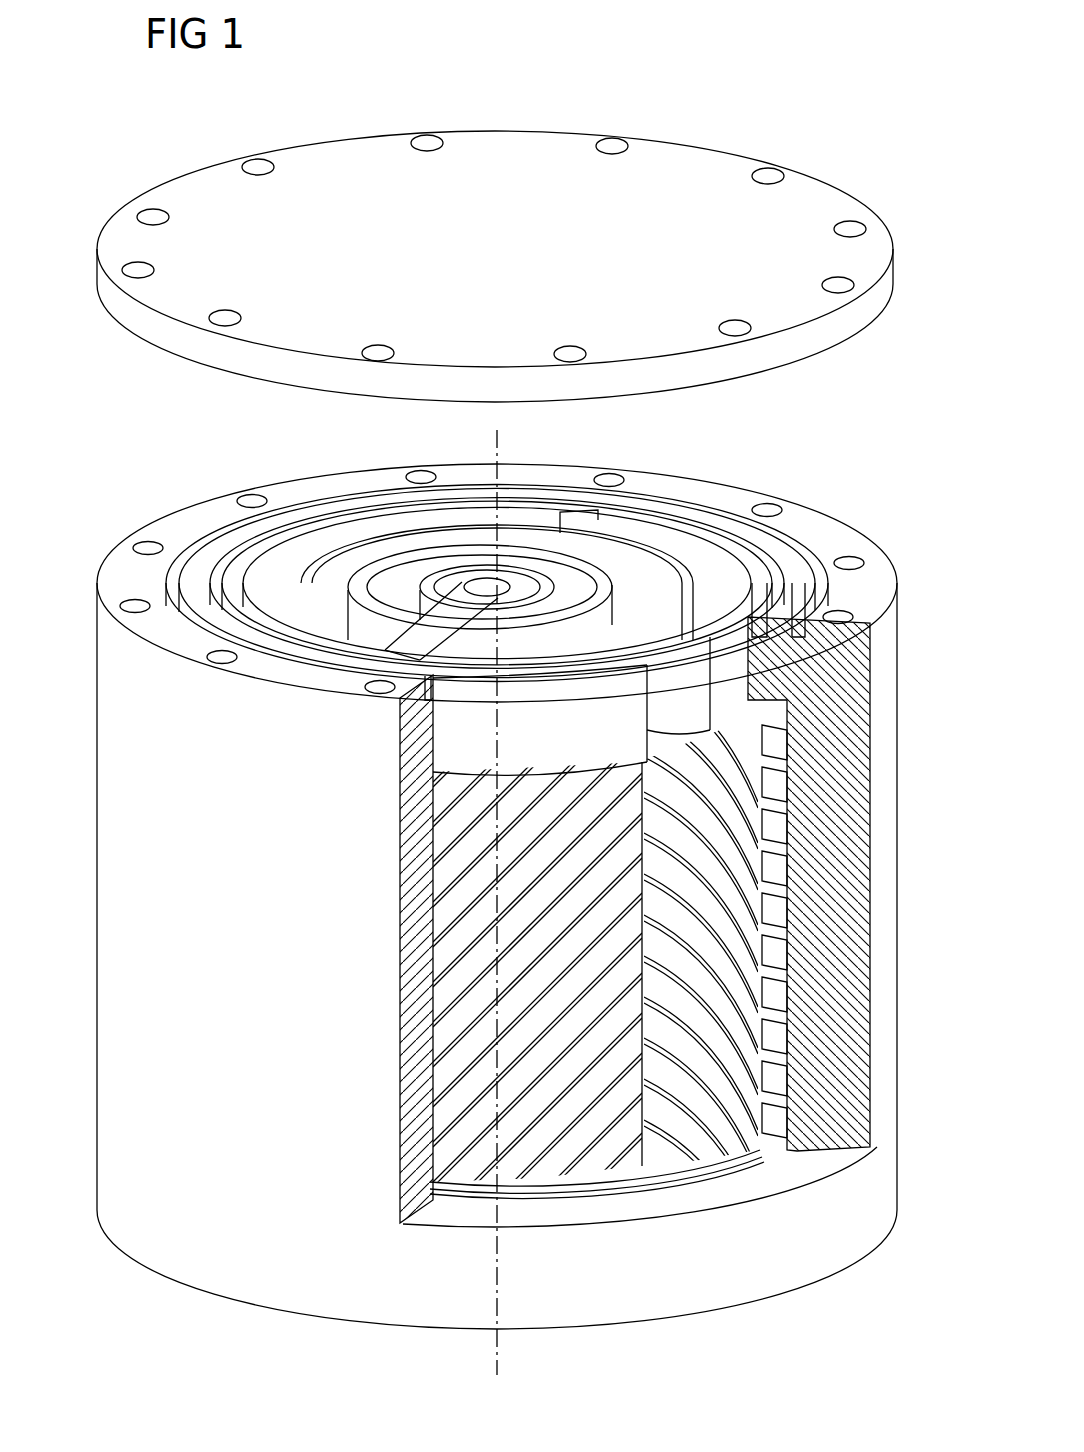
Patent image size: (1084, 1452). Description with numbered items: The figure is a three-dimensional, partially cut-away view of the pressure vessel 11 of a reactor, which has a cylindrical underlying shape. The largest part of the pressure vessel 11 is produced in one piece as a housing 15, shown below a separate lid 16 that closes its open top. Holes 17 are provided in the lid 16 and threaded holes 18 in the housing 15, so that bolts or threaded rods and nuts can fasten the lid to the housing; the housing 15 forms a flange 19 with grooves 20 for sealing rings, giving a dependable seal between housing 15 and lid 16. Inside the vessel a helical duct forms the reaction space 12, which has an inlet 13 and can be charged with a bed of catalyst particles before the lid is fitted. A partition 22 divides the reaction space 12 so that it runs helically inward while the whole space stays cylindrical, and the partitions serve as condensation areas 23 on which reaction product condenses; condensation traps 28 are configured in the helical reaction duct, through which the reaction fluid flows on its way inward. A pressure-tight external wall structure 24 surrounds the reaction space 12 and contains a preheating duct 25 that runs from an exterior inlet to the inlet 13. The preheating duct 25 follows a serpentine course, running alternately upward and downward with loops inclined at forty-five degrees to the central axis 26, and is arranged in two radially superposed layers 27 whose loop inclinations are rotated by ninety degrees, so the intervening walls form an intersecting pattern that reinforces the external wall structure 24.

The pressure vessel 11 is at (502, 877).
The reaction space 12 is at (528, 883).
The inlet 13 is at (622, 528).
The housing 15 is at (885, 650).
The lid 16 is at (469, 251).
The holes 17 is at (775, 178).
The threaded holes 18 is at (763, 508).
The flange 19 is at (454, 558).
The grooves 20 is at (772, 580).
The partition 22 is at (680, 572).
The condensation areas 23 is at (362, 535).
The external wall structure 24 is at (240, 556).
The preheating duct 25 is at (470, 1152).
The central axis 26 is at (497, 1357).
The layers 27 is at (740, 1152).
The condensation traps 28 is at (407, 636).